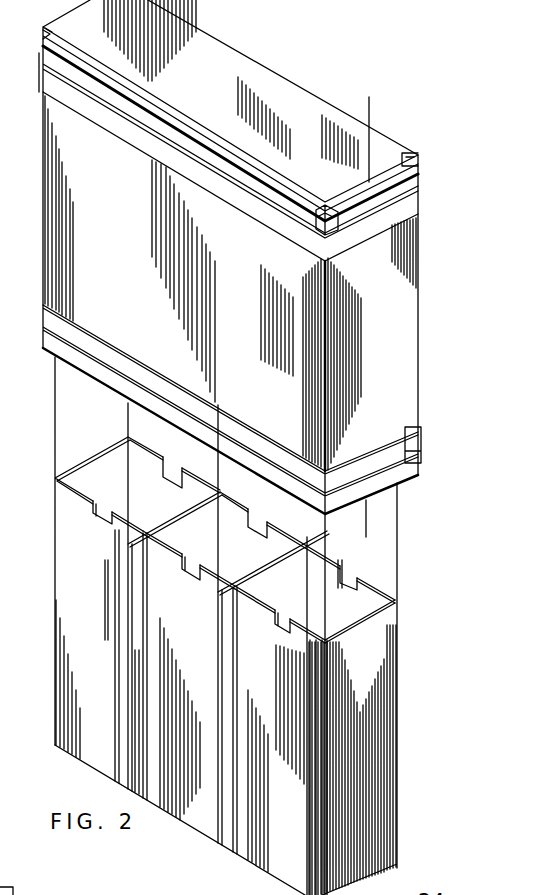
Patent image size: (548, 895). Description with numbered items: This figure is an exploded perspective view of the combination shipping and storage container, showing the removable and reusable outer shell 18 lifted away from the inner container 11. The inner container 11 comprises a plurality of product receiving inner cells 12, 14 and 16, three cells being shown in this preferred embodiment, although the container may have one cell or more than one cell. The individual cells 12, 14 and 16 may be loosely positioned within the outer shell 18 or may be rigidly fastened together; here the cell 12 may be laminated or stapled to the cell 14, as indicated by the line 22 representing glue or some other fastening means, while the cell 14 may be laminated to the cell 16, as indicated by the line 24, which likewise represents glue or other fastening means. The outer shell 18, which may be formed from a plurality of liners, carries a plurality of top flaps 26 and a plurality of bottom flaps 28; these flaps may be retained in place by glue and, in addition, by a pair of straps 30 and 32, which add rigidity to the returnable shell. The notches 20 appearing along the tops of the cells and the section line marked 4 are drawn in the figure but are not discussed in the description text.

The section line 4- 4 is at (359, 110).
The inner container 11 is at (268, 626).
The inner cell 12 is at (112, 472).
The inner cell 14 is at (237, 528).
The inner cell 16 is at (370, 598).
The outer shell 18 is at (382, 311).
The notches 20 is at (170, 468).
The line representing fastening means 22 is at (196, 500).
The line representing fastening means 24 is at (282, 548).
The top flaps 26 is at (426, 168).
The bottom flaps 28 is at (422, 430).
The strap 30 is at (421, 197).
The strap 32 is at (386, 448).